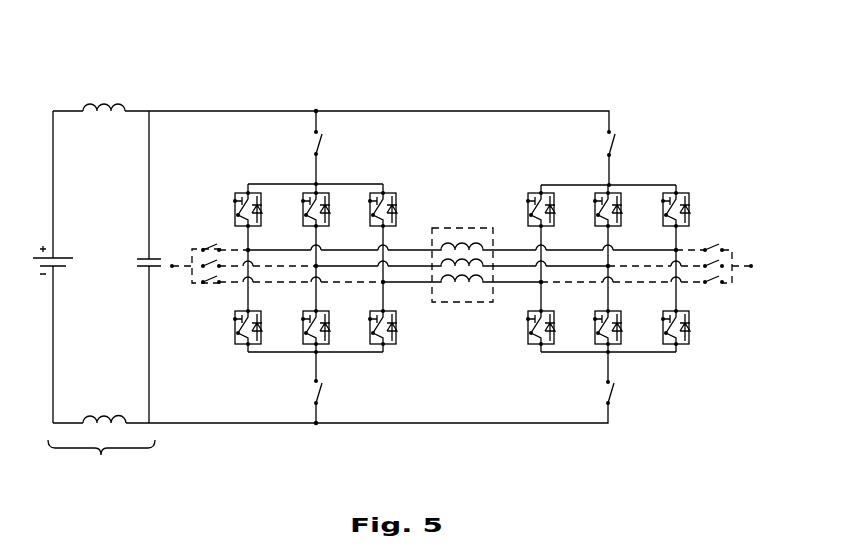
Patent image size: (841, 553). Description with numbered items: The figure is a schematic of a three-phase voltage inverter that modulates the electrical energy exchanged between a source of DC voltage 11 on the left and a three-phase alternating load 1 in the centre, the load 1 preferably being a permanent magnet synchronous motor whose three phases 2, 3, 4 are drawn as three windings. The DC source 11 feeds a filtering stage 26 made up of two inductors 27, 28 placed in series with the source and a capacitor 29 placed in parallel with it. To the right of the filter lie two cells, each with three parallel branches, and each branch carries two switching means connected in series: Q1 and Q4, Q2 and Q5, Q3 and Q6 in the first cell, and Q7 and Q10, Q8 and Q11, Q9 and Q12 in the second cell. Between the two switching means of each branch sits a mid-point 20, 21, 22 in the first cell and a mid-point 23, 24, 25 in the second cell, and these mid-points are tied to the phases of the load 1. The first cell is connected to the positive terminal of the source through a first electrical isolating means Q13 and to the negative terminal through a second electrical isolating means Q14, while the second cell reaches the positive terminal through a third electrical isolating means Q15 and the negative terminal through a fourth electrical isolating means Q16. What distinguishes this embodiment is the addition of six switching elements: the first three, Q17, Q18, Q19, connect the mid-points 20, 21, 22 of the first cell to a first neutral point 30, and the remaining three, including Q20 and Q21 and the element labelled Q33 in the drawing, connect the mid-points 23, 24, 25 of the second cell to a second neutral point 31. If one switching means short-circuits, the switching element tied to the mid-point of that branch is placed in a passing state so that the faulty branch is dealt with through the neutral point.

The three-phase alternating load 1 is at (465, 251).
The phase 2 is at (440, 238).
The phase 3 is at (478, 262).
The phase 4 is at (466, 302).
The source of DC voltage 11 is at (38, 255).
The mid-point 20 is at (246, 249).
The mid-point 21 is at (316, 266).
The mid-point 22 is at (383, 282).
The mid-point 23 is at (677, 250).
The mid-point 24 is at (608, 266).
The mid-point 25 is at (541, 282).
The filtering stage 26 is at (101, 463).
The inductor 27 is at (103, 100).
The inductor 28 is at (104, 410).
The capacitor 29 is at (143, 254).
The first neutral point 30 is at (172, 268).
The second neutral point 31 is at (751, 268).
The switching means Q1 is at (246, 192).
The switching means Q2 is at (300, 184).
The switching means Q3 is at (391, 184).
The switching means Q4 is at (245, 346).
The switching means Q5 is at (310, 355).
The switching means Q6 is at (392, 346).
The switching means Q7 is at (536, 192).
The switching means Q8 is at (598, 192).
The switching means Q9 is at (686, 192).
The switching means Q10 is at (528, 342).
The switching means Q11 is at (600, 355).
The switching means Q12 is at (688, 346).
The first electrical isolating means Q13 is at (321, 136).
The second electrical isolating means Q14 is at (320, 396).
The third electrical isolating means Q15 is at (614, 137).
The fourth electrical isolating means Q16 is at (612, 400).
The switching element Q17 is at (203, 247).
The switching element Q18 is at (201, 263).
The switching element Q19 is at (213, 286).
The switching element Q20 is at (722, 248).
The switching element Q21 is at (725, 264).
The selector switch Q33 is at (712, 286).